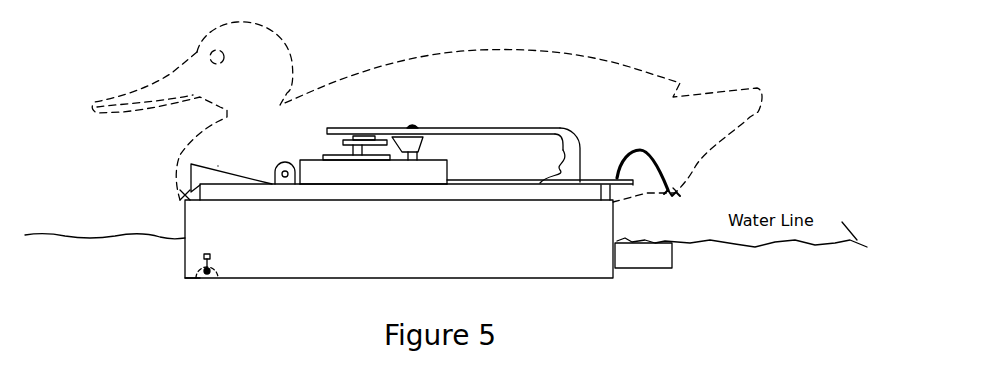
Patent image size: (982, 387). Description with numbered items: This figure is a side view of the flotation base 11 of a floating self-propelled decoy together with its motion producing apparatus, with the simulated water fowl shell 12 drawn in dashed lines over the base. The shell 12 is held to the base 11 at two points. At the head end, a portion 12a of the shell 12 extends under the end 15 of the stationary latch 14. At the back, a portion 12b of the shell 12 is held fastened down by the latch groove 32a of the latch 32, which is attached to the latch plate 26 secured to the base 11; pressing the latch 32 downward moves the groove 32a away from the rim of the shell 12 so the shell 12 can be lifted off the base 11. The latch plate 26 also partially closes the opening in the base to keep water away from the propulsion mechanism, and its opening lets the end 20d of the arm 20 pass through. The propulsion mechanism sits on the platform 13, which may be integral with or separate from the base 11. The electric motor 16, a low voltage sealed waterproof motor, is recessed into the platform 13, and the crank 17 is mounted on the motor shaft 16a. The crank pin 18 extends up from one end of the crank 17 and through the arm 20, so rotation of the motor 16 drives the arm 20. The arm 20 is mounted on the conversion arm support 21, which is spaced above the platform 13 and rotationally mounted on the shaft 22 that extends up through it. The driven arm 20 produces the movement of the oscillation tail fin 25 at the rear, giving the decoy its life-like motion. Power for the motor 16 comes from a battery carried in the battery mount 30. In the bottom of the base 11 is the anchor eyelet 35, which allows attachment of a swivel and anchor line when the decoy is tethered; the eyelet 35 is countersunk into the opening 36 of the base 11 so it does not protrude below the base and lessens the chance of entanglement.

The flotation base 11 is at (185, 246).
The simulated water fowl shell 12 is at (590, 53).
The portion of decoy shell 12a is at (185, 196).
The portion of decoy shell 12b is at (675, 190).
The platform 13 is at (347, 173).
The stationary latch 14 is at (218, 166).
The end of stationary latch 15 is at (190, 173).
The electric motor 16 is at (337, 165).
The shaft of motor 16a is at (358, 138).
The crank 17 is at (358, 150).
The crank pin 18 is at (377, 128).
The arm 20 is at (503, 128).
The end of arm 20d is at (562, 173).
The conversion arm support 21 is at (420, 137).
The shaft 22 is at (412, 127).
The oscillation tail fin 25 is at (653, 262).
The latch plate 26 is at (588, 186).
The battery mount 30 is at (282, 178).
The latch 32 is at (658, 170).
The latch groove 32a is at (668, 195).
The anchor eyelet 35 is at (207, 280).
The opening 36 is at (187, 277).